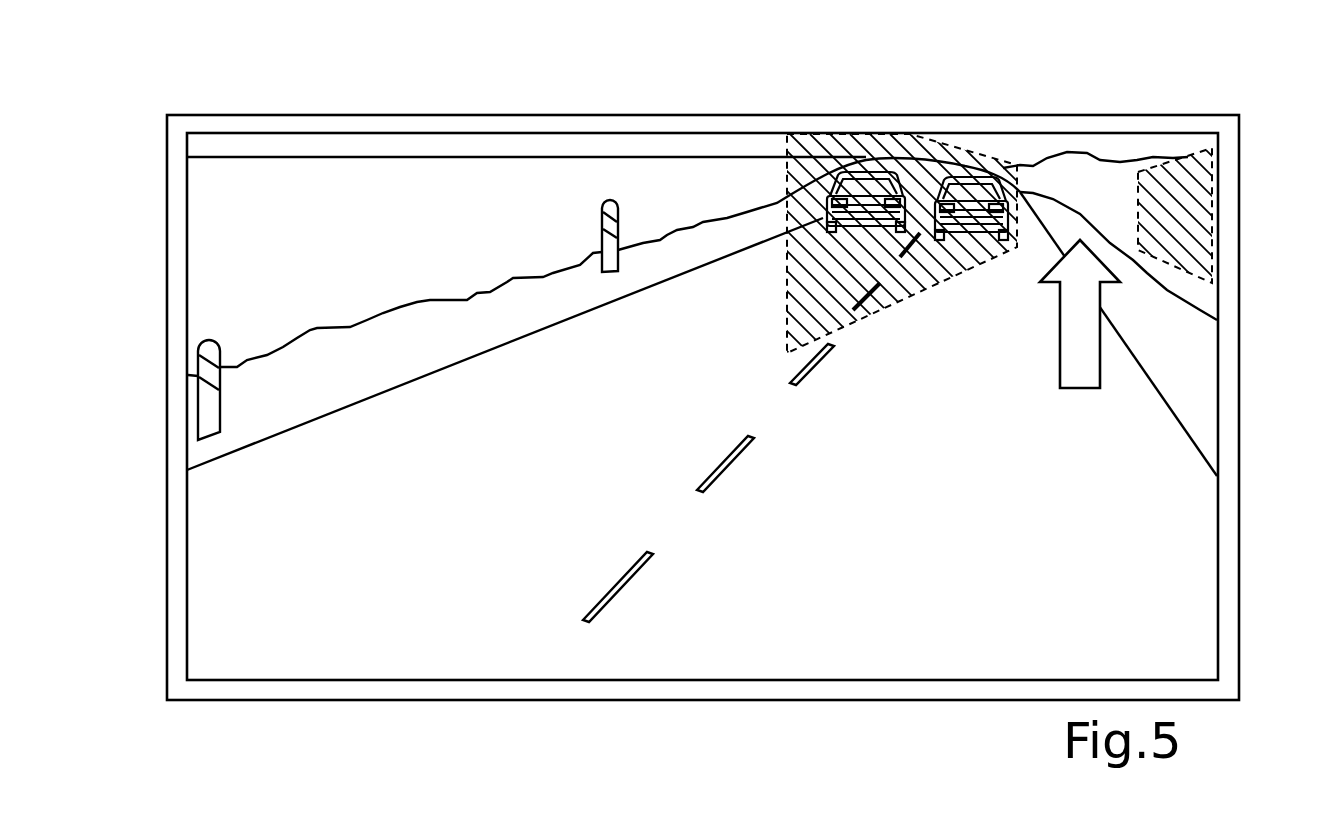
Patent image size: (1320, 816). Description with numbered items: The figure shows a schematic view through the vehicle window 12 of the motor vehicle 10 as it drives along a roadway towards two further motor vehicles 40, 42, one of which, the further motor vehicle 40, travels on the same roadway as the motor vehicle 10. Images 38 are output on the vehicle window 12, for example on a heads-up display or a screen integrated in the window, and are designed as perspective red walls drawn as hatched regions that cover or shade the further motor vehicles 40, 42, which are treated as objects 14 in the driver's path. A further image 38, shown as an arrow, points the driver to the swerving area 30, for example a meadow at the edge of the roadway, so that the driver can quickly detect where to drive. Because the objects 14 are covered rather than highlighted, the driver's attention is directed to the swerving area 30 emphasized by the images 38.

The motor vehicle 10 is at (167, 307).
The vehicle window 12 is at (187, 432).
The object 14 is at (919, 137).
The further motor vehicle 42 is at (862, 170).
The further motor vehicle 40 is at (966, 176).
The swerving area 30 is at (1079, 185).
The image 38 is at (790, 194).